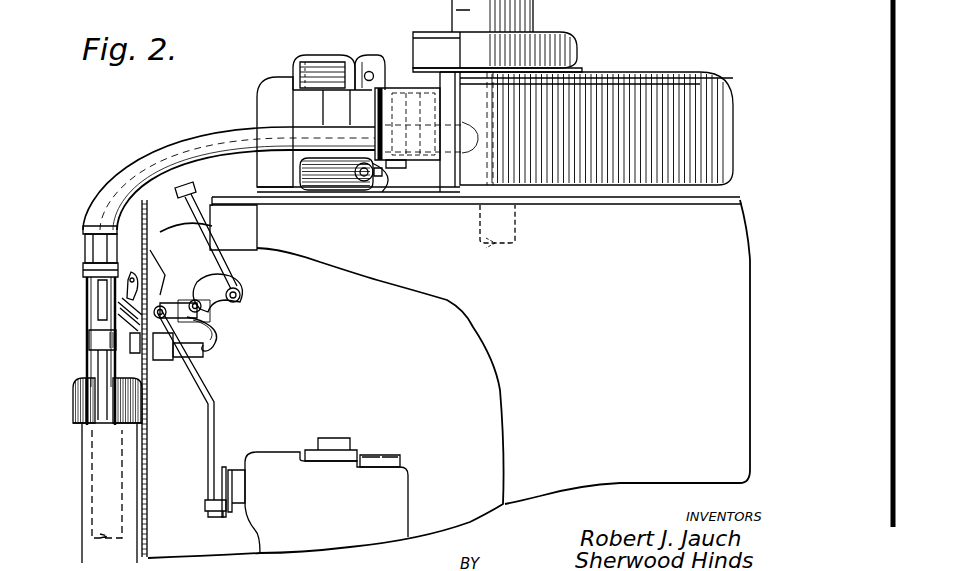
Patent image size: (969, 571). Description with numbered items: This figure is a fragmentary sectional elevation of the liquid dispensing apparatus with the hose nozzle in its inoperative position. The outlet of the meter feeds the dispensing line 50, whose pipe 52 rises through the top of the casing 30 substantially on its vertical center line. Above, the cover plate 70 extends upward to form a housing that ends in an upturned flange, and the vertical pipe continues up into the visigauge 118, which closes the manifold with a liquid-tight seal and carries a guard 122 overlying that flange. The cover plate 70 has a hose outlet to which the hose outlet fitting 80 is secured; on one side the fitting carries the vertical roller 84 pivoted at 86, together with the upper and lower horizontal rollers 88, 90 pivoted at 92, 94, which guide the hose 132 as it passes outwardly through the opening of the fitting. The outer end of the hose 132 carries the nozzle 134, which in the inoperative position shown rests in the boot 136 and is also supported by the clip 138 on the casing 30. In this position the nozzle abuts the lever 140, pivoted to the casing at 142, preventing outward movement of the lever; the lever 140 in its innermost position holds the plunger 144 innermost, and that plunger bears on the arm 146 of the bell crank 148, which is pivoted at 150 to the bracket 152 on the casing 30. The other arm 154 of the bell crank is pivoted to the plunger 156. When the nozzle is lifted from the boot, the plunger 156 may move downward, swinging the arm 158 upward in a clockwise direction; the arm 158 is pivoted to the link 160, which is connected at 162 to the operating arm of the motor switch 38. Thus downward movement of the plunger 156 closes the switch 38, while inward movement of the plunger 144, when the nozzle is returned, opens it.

The casing 30 is at (750, 243).
The motor switch 38 is at (282, 455).
The dispensing line 50 is at (735, 197).
The pipe 52 is at (516, 222).
The cover plate 70 is at (735, 113).
The hose outlet fitting 80 is at (318, 56).
The vertical roller 84 is at (383, 92).
The pivot 86 is at (383, 168).
The upper horizontal roller 88 is at (325, 78).
The lower horizontal roller 90 is at (341, 181).
The pivot 92 is at (369, 56).
The pivot 94 is at (377, 175).
The visigauge 118 is at (533, 5).
The guard 122 is at (580, 40).
The hose 132 is at (215, 135).
The nozzle 134 is at (78, 277).
The boot 136 is at (88, 473).
The clip 138 is at (100, 338).
The lever 140 is at (145, 368).
The pivot 142 is at (136, 272).
The plunger 144 is at (198, 362).
The arm 146 is at (217, 347).
The bell crank 148 is at (193, 320).
The pivot 150 is at (213, 313).
The bracket 152 is at (168, 255).
The arm 154 is at (243, 290).
The plunger 156 is at (194, 196).
The arm 158 is at (220, 333).
The link 160 is at (217, 405).
The connection 162 is at (212, 508).